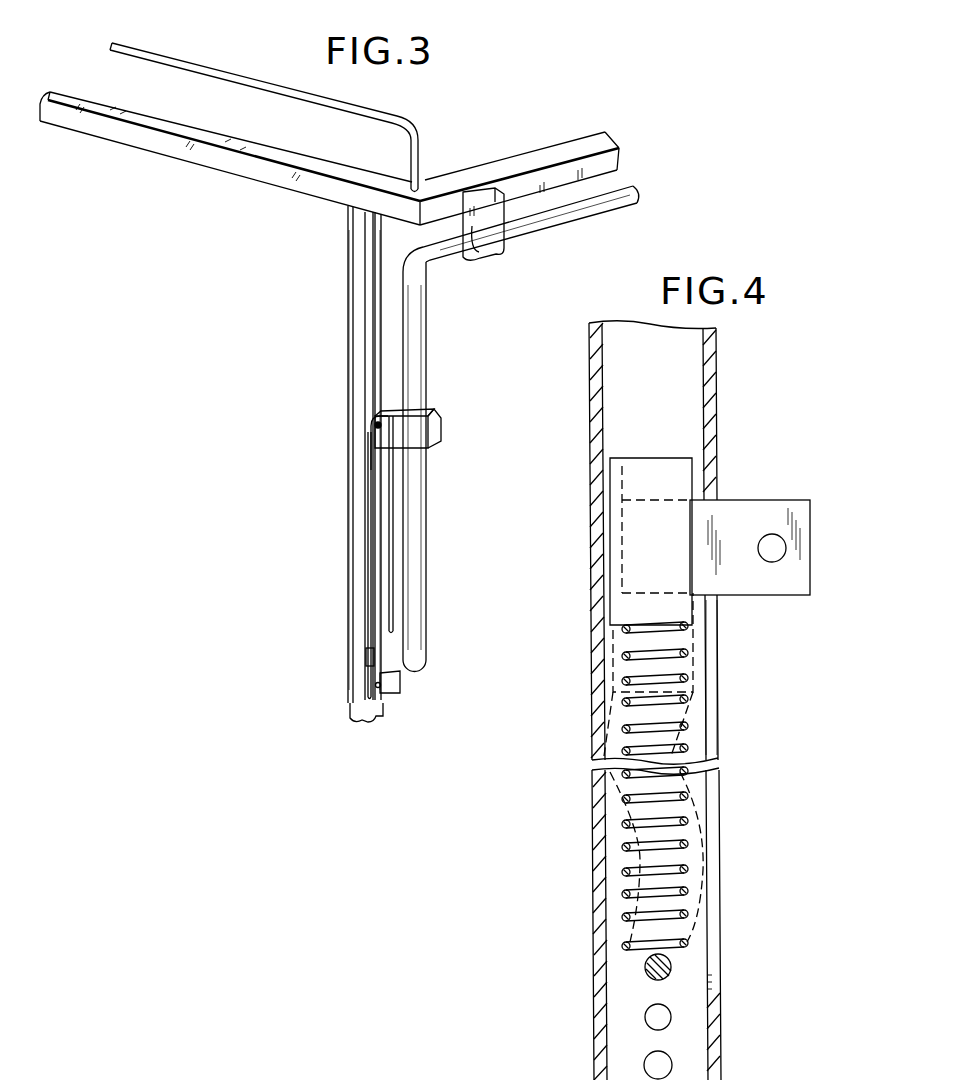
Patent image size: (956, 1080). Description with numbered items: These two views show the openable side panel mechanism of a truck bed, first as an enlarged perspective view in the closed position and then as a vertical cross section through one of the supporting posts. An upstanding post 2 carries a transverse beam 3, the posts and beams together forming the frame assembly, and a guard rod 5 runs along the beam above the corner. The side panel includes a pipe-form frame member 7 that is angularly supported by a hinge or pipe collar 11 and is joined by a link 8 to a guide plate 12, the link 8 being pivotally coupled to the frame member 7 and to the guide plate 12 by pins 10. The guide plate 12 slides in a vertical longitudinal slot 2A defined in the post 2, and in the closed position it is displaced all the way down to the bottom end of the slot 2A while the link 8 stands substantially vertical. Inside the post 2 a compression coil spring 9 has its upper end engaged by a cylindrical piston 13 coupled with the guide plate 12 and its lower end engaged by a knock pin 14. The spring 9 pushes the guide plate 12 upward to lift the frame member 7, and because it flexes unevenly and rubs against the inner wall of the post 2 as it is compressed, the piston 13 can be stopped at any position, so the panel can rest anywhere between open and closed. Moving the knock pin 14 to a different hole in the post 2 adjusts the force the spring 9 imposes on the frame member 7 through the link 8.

In FIG. 3, the upstanding post 2 is at (352, 358).
In FIG. 4, the upstanding post 2 is at (598, 862).
In FIG. 3, the vertical longitudinal slot 2A is at (365, 512).
In FIG. 4, the vertical longitudinal slot 2A is at (718, 729).
In FIG. 3, the transverse beam 3 is at (200, 166).
In FIG. 3, the guard rod 5 is at (418, 135).
In FIG. 3, the frame member 7 is at (428, 363).
In FIG. 3, the link 8 is at (372, 556).
In FIG. 3, the compression coil spring 9 is at (365, 708).
In FIG. 4, the compression coil spring 9 is at (625, 630).
In FIG. 3, the pin 10 is at (372, 448).
In FIG. 3, the hinge or pipe collar 11 is at (484, 248).
In FIG. 3, the guide plate 12 is at (400, 684).
In FIG. 4, the guide plate 12 is at (782, 592).
In FIG. 3, the piston 13 is at (368, 660).
In FIG. 4, the piston 13 is at (683, 466).
In FIG. 4, the knock pin 14 is at (672, 965).